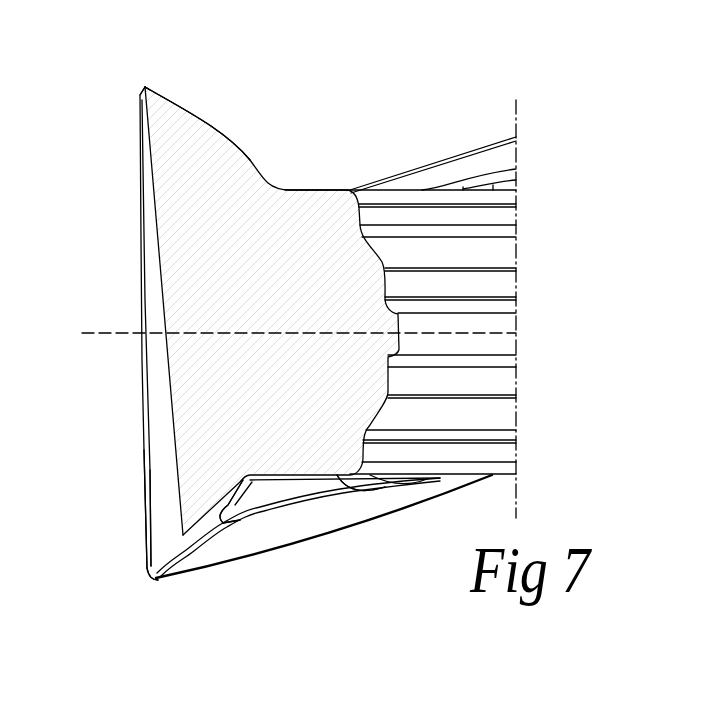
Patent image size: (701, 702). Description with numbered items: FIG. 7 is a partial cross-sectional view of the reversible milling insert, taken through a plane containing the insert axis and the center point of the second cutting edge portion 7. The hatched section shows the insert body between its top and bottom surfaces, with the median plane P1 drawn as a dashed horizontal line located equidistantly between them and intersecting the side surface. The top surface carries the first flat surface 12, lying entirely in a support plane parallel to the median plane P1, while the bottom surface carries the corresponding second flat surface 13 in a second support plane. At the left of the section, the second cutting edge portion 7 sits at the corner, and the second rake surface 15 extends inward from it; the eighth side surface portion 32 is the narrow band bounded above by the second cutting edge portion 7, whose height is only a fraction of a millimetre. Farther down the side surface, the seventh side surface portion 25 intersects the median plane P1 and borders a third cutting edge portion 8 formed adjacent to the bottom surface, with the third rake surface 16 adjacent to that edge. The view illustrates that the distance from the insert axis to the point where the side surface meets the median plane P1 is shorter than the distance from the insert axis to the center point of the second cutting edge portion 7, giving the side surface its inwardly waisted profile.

The second cutting edge portion 7 is at (145, 87).
The third cutting edge portion 8 is at (162, 558).
The first flat surface 12 is at (298, 190).
The second flat surface 13 is at (315, 476).
The second rake surface 15 is at (178, 103).
The third rake surface 16 is at (195, 537).
The seventh side surface portion 25 is at (156, 286).
The eighth side surface portion 32 is at (141, 96).
The median plane P1 is at (281, 334).